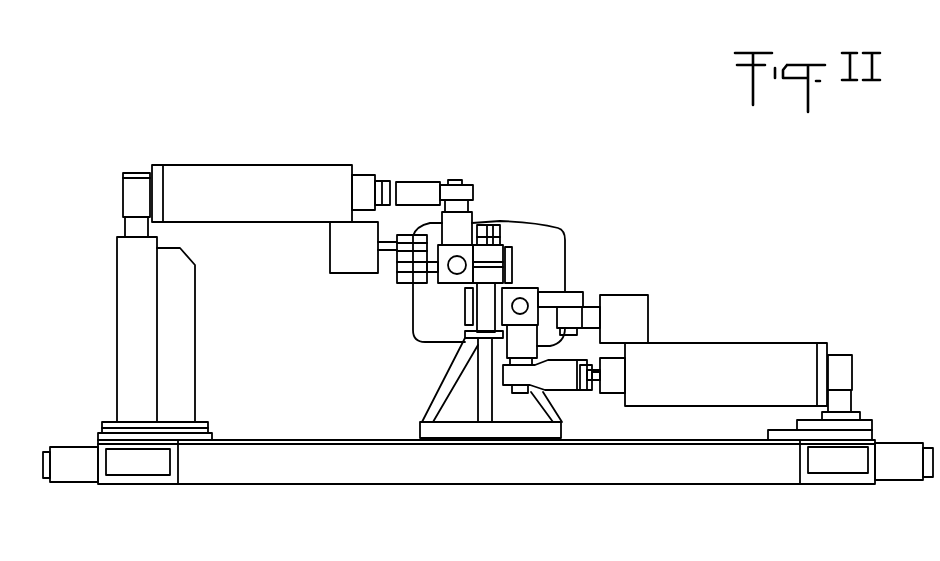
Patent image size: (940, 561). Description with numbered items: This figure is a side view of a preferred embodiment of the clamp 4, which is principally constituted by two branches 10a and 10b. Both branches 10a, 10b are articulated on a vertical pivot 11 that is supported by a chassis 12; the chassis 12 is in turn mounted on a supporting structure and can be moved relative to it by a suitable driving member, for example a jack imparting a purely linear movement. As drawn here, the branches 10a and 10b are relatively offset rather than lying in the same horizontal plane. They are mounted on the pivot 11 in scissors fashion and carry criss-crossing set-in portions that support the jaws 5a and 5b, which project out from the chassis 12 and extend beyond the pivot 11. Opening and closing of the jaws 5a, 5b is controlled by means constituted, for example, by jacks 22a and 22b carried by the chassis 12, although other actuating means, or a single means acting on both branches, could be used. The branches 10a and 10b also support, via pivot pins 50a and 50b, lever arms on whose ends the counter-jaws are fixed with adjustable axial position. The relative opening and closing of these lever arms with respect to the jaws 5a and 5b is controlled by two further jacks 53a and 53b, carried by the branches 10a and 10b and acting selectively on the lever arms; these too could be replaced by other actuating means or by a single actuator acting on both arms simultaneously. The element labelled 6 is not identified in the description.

The clamp 4 is at (574, 211).
The jaw 5a is at (566, 238).
The jaw 5b is at (422, 340).
The fastening bolt 6 is at (537, 226).
The branch 10a is at (540, 292).
The branch 10b is at (446, 286).
The vertical pivot 11 is at (485, 399).
The chassis 12 is at (334, 468).
The jack 22a is at (772, 343).
The jack 22b is at (226, 167).
The pivot pin 50a is at (567, 338).
The pivot pin 50b is at (402, 262).
The jack 53a is at (650, 324).
The jack 53b is at (330, 246).